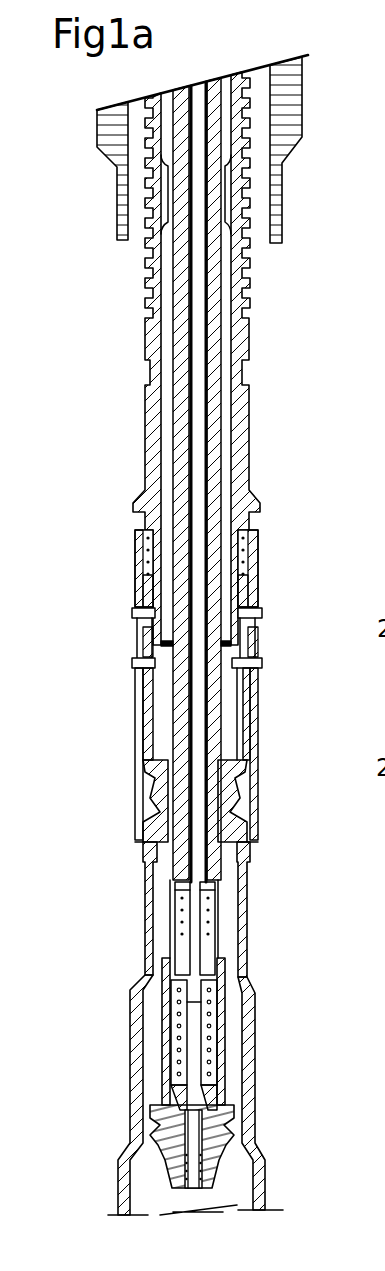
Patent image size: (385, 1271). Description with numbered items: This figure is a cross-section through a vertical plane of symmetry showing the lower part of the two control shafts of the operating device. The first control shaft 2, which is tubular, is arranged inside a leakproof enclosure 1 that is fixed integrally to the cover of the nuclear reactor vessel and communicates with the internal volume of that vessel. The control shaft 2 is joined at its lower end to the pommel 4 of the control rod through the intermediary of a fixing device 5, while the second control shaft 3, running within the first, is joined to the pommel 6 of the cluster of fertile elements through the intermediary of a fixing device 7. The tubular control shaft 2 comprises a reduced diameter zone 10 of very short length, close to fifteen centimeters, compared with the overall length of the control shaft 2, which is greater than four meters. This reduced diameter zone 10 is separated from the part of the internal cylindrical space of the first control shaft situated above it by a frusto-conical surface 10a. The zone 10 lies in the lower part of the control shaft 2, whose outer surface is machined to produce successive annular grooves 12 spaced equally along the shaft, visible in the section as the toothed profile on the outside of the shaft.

The leakproof enclosure 1 is at (287, 123).
The first control shaft 2 is at (244, 358).
The second control shaft 3 is at (208, 448).
The pommel of the control rod 4 is at (247, 912).
The fixing device 5 is at (230, 774).
The pommel of the cluster of fertile elements 6 is at (207, 1193).
The fixing device 7 is at (233, 1113).
The reduced diameter zone 10 is at (245, 212).
The frusto-conical surface 10a is at (242, 150).
The annular grooves 12 is at (246, 257).